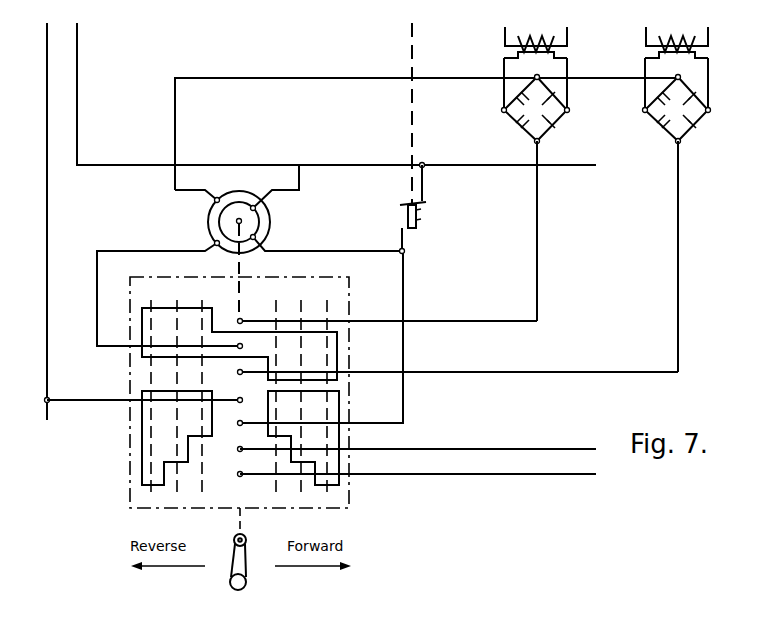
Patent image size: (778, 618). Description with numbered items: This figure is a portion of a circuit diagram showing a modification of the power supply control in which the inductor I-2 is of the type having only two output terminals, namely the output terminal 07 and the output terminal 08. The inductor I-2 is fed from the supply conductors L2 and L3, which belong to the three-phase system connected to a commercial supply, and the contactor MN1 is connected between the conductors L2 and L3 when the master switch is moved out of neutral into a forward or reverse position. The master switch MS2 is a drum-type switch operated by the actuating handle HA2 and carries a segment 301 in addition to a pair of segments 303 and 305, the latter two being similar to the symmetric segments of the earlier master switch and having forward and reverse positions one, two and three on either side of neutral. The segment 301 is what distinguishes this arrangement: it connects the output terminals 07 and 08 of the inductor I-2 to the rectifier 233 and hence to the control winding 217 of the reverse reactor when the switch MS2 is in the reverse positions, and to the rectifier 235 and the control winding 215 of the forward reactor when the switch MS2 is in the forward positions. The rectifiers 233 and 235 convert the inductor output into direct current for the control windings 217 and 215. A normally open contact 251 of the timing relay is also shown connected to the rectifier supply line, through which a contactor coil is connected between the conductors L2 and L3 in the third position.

The conductor L3 is at (47, 187).
The conductor L2 is at (357, 165).
The normally open contact 251 is at (358, 77).
The inductor I-2 is at (185, 224).
The output terminal 07 is at (219, 196).
The output terminal 08 is at (214, 243).
The contactor MN1 is at (400, 217).
The control winding 217 is at (548, 34).
The control winding 215 is at (689, 34).
The rectifier 233 is at (557, 113).
The rectifier 235 is at (690, 110).
The master switch MS2 is at (119, 382).
The segment 301 is at (338, 356).
The segment 303 is at (340, 412).
The segment 305 is at (142, 433).
The actuating handle HA2 is at (246, 586).